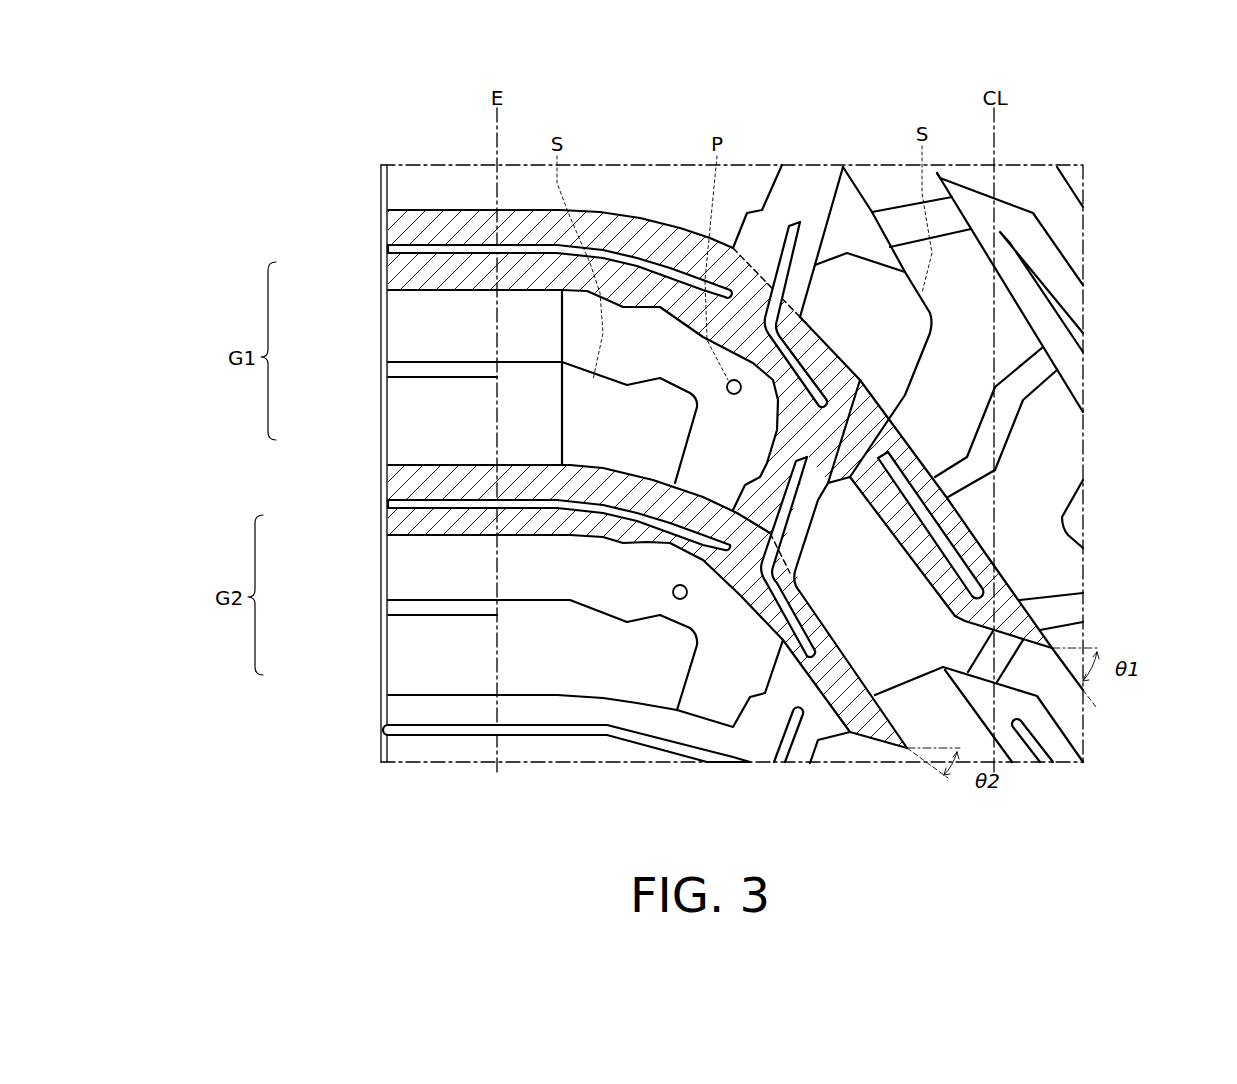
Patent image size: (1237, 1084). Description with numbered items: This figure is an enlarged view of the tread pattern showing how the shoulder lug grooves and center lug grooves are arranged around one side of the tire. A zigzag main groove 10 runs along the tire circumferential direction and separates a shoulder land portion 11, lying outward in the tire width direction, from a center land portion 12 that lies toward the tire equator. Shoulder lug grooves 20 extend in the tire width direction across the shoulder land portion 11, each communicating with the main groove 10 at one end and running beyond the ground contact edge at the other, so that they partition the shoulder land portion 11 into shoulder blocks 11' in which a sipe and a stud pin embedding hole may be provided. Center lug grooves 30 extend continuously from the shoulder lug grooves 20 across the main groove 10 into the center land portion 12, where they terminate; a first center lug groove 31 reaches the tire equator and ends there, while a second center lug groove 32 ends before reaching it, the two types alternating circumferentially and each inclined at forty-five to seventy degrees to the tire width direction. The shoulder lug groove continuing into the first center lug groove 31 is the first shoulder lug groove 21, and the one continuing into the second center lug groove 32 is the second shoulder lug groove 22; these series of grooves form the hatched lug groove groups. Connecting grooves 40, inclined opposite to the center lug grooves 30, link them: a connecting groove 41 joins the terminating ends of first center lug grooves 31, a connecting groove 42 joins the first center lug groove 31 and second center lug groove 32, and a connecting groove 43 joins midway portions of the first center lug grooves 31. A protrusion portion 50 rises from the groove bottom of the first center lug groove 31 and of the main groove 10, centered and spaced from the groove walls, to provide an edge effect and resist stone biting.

The main groove 10 is at (826, 163).
The shoulder land portion 11 is at (585, 420).
The shoulder block 11' is at (422, 473).
The center land portion 12 is at (1031, 165).
The shoulder lug groove 20 is at (591, 479).
The first shoulder lug groove 21 is at (537, 273).
The second shoulder lug groove 22 is at (835, 695).
The center lug groove 30 is at (676, 456).
The first center lug groove 31 is at (838, 458).
The second center lug groove 32 is at (527, 525).
The connecting groove 40 is at (1028, 478).
The connecting groove 41 is at (1002, 657).
The connecting groove 42 is at (1073, 610).
The connecting groove 43 is at (1010, 412).
The protrusion portion 50 is at (547, 730).